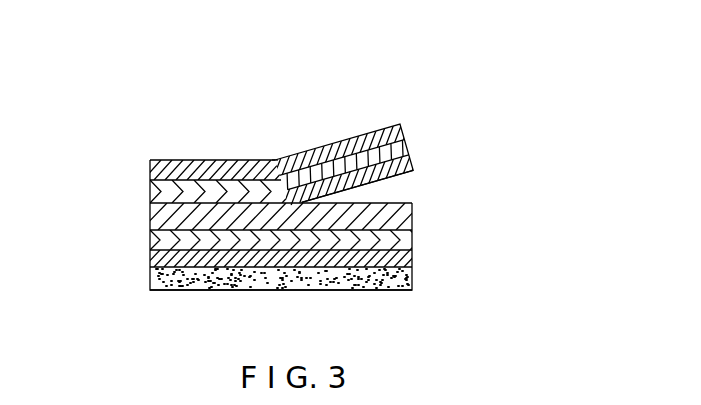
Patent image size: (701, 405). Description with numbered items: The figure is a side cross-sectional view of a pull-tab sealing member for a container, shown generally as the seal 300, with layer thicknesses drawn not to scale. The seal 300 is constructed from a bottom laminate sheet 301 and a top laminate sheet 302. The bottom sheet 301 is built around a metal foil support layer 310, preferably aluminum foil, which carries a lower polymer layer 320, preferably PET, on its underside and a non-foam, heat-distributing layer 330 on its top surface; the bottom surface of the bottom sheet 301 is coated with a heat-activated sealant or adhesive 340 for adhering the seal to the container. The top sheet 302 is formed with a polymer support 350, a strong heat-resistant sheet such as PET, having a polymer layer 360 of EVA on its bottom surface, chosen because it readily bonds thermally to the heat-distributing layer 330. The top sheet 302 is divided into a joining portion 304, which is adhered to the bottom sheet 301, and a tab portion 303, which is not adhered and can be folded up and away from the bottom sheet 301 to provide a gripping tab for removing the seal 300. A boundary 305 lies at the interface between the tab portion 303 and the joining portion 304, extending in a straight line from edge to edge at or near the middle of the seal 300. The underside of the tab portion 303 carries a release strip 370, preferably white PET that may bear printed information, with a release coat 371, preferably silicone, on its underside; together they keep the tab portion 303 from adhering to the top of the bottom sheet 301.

The seal 300 is at (149, 107).
The bottom laminate sheet 301 is at (127, 293).
The top laminate sheet 302 is at (127, 163).
The tab portion 303 is at (400, 143).
The joining portion 304 is at (275, 157).
The boundary 305 is at (274, 157).
The metal foil support layer 310 is at (412, 240).
The lower polymer layer 320 is at (412, 258).
The heat-distributing layer 330 is at (412, 217).
The heat-activated sealant or adhesive 340 is at (412, 282).
The polymer support 350 is at (402, 128).
The polymer layer 360 is at (400, 148).
The release strip 370 is at (400, 165).
The release coat 371 is at (400, 190).